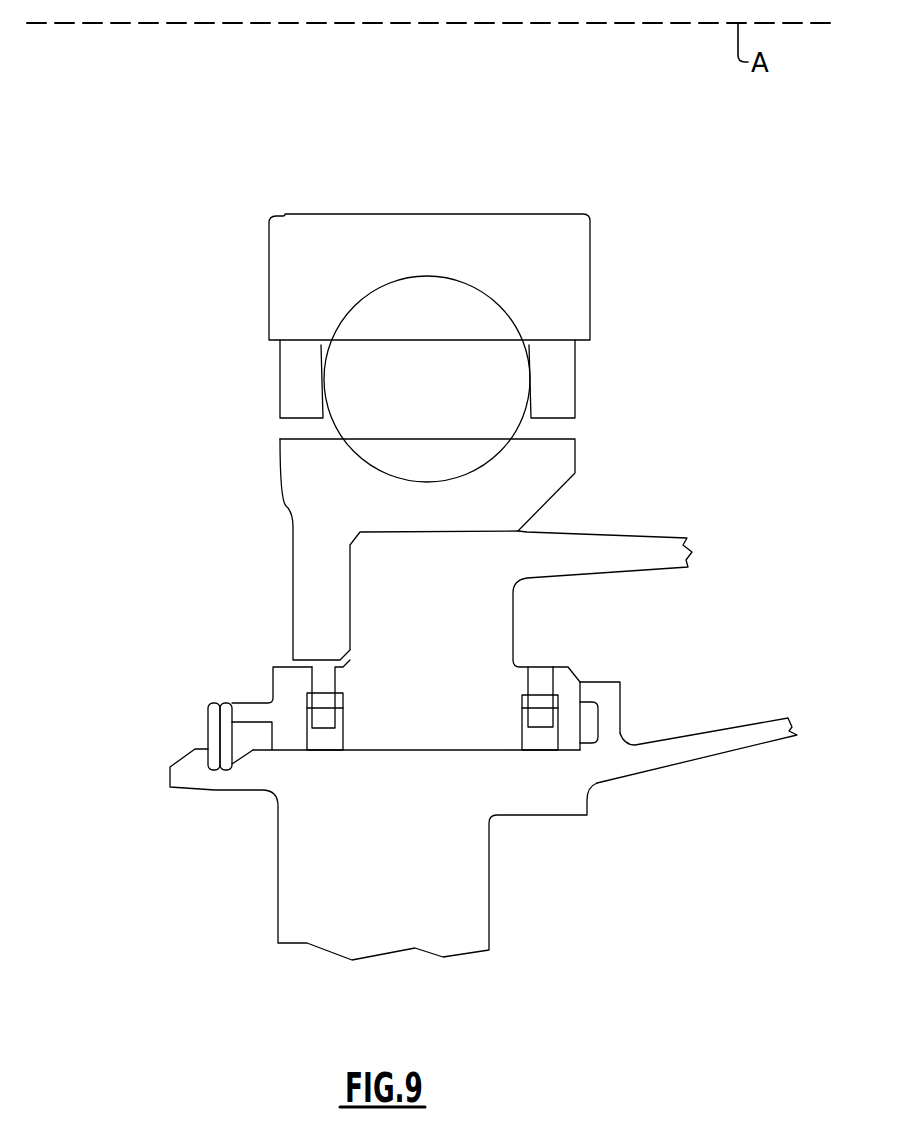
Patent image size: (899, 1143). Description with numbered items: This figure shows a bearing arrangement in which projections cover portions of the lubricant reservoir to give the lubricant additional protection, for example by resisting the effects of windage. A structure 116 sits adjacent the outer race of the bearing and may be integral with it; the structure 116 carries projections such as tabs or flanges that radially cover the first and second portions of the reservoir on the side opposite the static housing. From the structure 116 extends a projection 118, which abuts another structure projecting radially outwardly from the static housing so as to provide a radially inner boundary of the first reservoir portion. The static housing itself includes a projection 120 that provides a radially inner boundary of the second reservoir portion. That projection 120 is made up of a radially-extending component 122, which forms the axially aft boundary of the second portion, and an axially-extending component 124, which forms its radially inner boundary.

The structure 116 is at (297, 680).
The projection 118 is at (253, 712).
The projection 120 is at (624, 706).
The radially-extending component 122 is at (607, 720).
The axially-extending component 124 is at (595, 690).